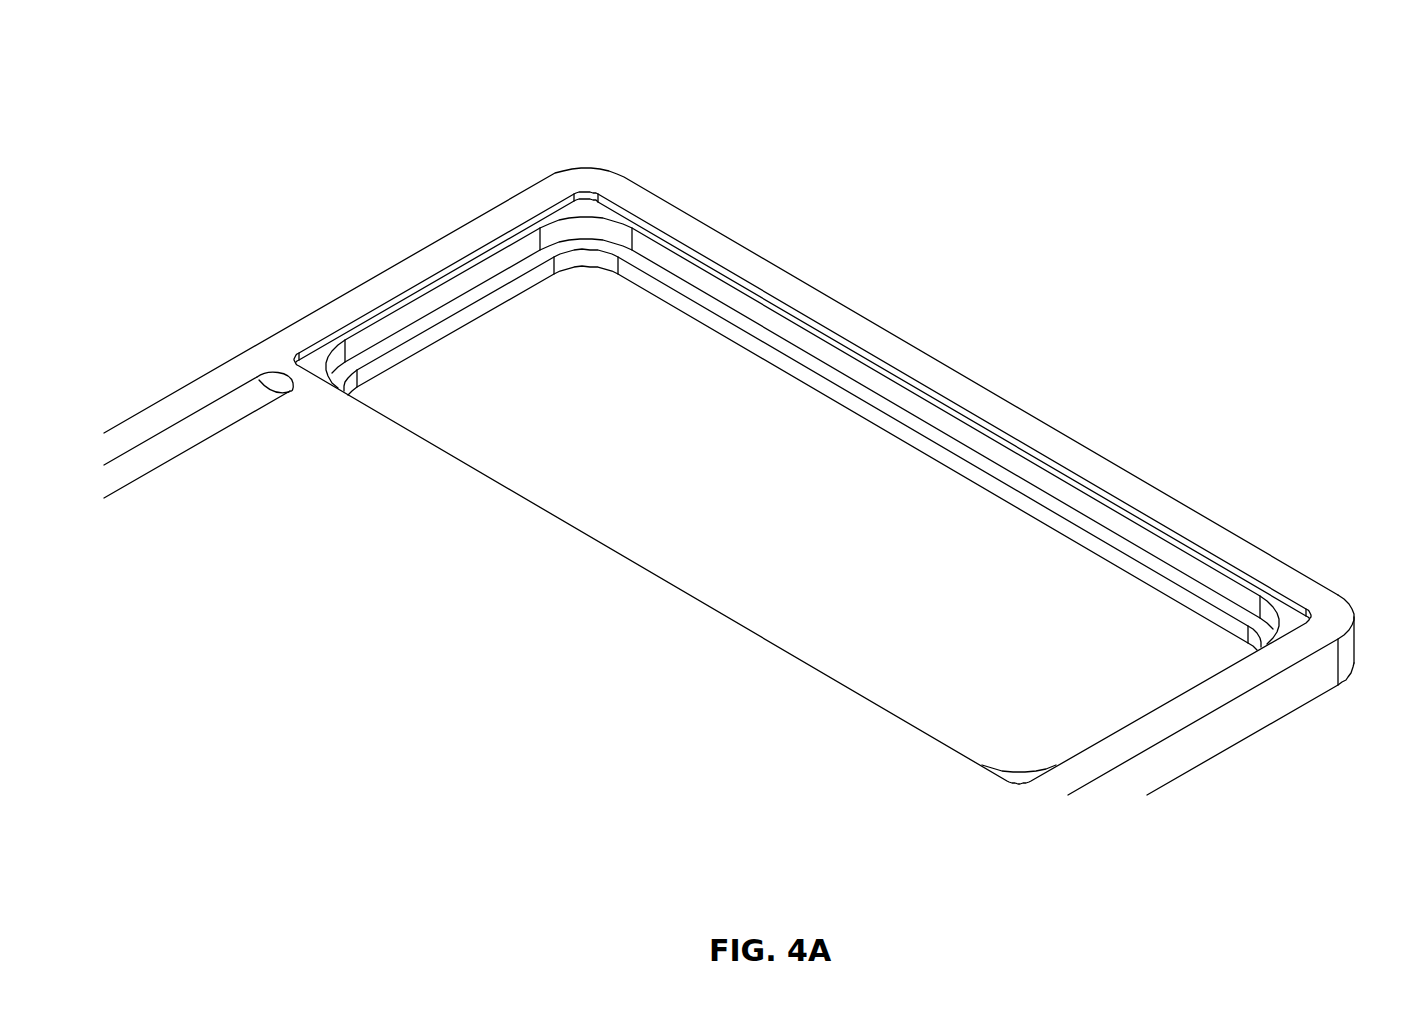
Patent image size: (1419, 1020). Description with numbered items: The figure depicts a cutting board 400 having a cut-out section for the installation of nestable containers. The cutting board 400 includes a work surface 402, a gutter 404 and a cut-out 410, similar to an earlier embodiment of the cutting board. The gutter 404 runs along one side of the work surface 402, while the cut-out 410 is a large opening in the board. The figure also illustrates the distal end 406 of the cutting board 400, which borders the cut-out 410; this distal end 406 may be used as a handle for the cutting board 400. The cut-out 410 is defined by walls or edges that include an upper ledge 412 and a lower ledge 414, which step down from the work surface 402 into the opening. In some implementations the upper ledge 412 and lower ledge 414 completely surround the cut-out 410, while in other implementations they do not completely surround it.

The cutting board 400 is at (751, 457).
The work surface 402 is at (721, 413).
The gutter 404 is at (148, 458).
The distal end 406 is at (953, 384).
The cut-out 410 is at (802, 488).
The upper ledge 412 is at (1290, 612).
The lower ledge 414 is at (568, 245).